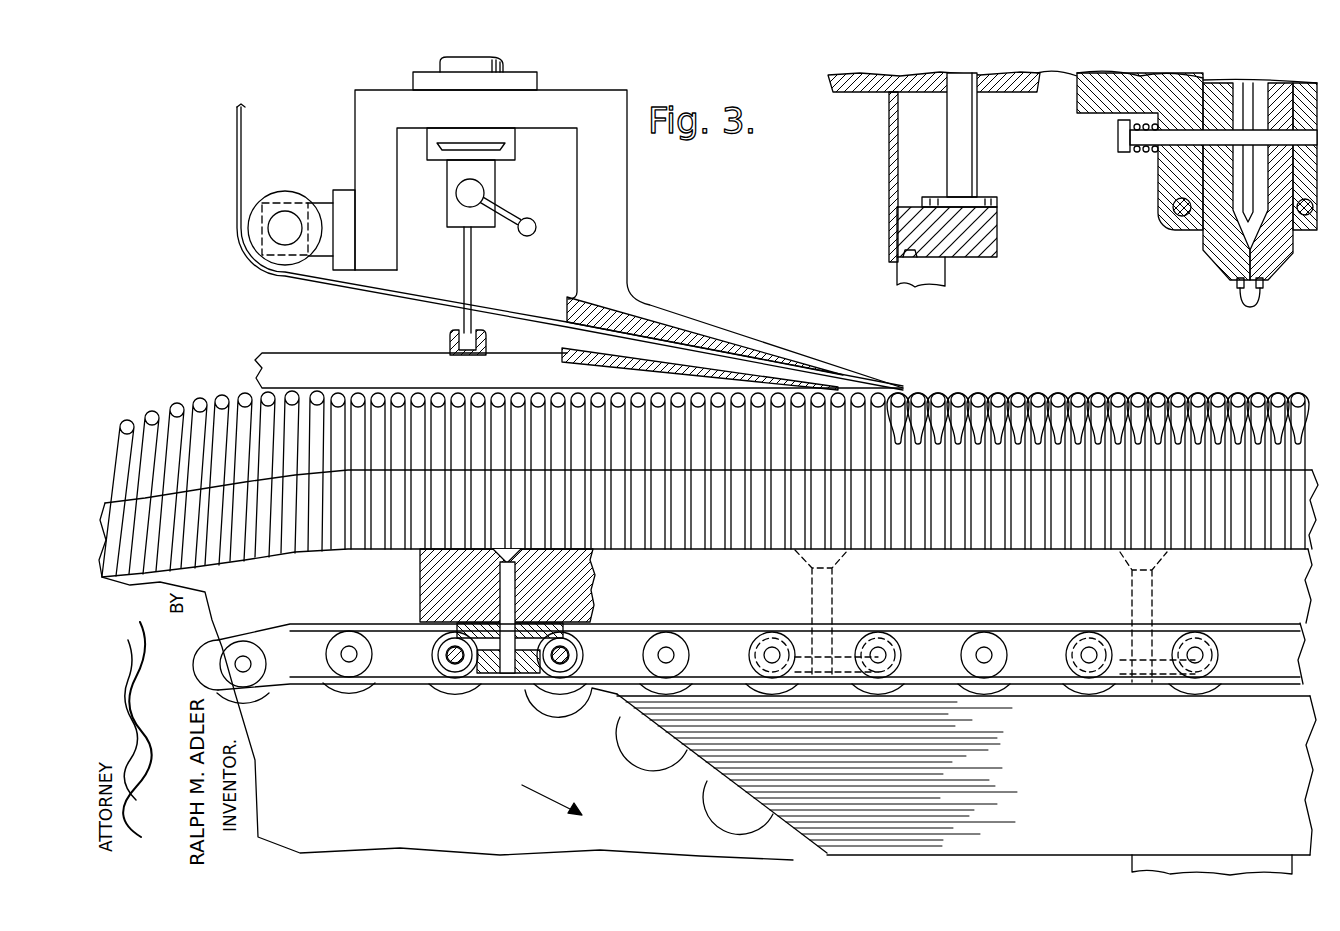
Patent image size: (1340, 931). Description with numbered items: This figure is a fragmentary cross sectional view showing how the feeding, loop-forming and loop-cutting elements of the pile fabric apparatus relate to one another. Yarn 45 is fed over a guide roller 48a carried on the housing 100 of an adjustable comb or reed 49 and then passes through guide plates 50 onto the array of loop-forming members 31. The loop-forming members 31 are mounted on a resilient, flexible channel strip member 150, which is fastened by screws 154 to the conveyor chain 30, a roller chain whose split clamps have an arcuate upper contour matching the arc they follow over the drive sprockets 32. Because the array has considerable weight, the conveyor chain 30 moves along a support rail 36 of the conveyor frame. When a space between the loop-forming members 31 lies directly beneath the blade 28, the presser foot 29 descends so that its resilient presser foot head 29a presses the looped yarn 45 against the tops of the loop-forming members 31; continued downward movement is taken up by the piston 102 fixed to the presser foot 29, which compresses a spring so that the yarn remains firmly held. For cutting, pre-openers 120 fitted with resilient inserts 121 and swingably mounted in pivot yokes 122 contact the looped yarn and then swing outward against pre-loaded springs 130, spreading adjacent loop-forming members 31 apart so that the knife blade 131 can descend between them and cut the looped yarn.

The housing 100 is at (357, 120).
The guide roller 48a is at (285, 192).
The yarn 45 is at (235, 186).
The adjustable comb or reed 49 is at (500, 183).
The guide plates 50 is at (777, 360).
The loop-forming members 31 is at (152, 410).
The channel strip member 150 is at (701, 600).
The screws 154 is at (830, 590).
The conveyor chain 30 is at (390, 668).
The drive sprockets 32 is at (787, 852).
The support rail 36 is at (905, 840).
The blade 28 is at (888, 152).
The piston 102 is at (978, 153).
The presser foot 29 is at (997, 224).
The presser foot head 29a is at (945, 268).
The pre-loaded springs 130 is at (1133, 155).
The pivot yokes 122 is at (1158, 195).
The knife blade 131 is at (1205, 240).
The pre-openers 120 is at (1215, 268).
The resilient inserts 121 is at (1250, 308).